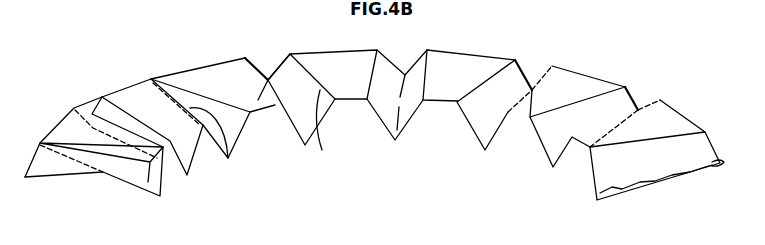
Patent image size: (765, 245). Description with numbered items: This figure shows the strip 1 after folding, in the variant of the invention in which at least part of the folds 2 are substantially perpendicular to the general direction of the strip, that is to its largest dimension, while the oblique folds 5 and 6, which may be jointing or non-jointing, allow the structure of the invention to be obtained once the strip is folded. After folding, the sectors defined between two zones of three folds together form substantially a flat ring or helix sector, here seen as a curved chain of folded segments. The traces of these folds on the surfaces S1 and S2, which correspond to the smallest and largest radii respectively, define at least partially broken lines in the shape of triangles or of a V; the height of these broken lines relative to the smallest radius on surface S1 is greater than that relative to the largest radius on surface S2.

The strip 1 is at (374, 100).
The folds 2 is at (398, 124).
The oblique fold 5 is at (321, 132).
The oblique fold 6 is at (237, 130).
The surface S1 is at (148, 158).
The surface S2 is at (25, 178).